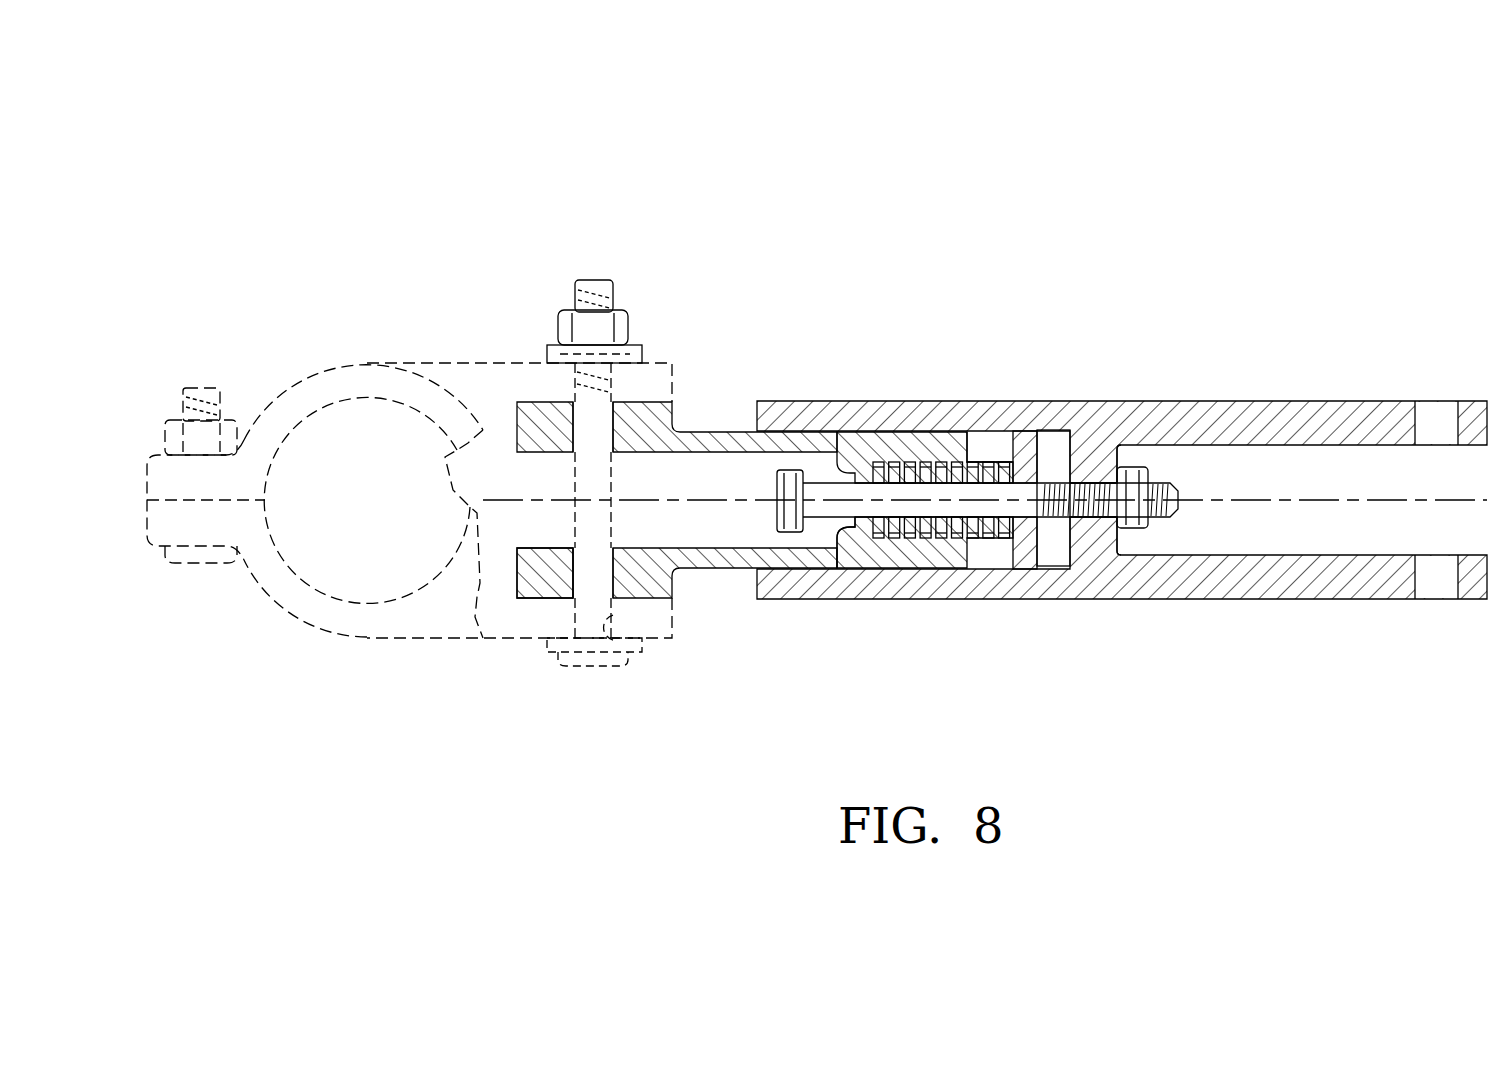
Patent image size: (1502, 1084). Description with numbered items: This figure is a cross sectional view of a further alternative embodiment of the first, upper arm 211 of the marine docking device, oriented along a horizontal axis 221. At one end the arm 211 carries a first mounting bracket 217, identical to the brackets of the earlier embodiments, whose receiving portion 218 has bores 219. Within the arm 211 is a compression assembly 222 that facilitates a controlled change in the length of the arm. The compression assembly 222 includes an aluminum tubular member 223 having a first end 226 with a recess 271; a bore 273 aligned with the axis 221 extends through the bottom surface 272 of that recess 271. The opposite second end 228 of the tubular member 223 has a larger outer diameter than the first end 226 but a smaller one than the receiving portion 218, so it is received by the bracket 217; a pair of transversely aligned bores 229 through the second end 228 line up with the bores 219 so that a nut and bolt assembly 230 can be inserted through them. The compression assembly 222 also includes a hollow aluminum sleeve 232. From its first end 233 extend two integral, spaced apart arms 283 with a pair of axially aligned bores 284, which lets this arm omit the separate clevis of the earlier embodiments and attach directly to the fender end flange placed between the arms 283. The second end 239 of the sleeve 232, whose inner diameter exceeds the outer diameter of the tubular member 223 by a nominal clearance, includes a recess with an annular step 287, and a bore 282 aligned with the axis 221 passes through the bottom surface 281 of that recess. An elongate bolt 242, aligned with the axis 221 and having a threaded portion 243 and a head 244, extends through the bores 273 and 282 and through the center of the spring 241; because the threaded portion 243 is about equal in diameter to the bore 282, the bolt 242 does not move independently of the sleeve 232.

The first arm 211 is at (900, 280).
The first mounting bracket 217 is at (367, 362).
The receiving portion 218 is at (483, 398).
The bores 219 is at (623, 657).
The horizontal axis 221 is at (1353, 498).
The compression assembly 222 is at (1062, 372).
The tubular member 223 is at (750, 570).
The first end 226 is at (915, 560).
The second end 228 is at (548, 575).
The transversely aligned bores 229 is at (613, 430).
The nut and bolt assembly 230 is at (597, 282).
The sleeve 232 is at (1272, 597).
The first end 233 is at (1167, 418).
The second end 239 is at (890, 410).
The spring 241 is at (990, 535).
The elongate bolt 242 is at (943, 507).
The threaded portion 243 is at (1168, 513).
The head 244 is at (790, 492).
The recess 271 is at (890, 535).
The bottom surface 272 is at (845, 468).
The bore 273 is at (850, 520).
The bottom surface 281 is at (1100, 535).
The bore 282 is at (1113, 510).
The arms 283 is at (1308, 418).
The axially aligned bores 284 is at (1460, 417).
The annular step 287 is at (1013, 447).